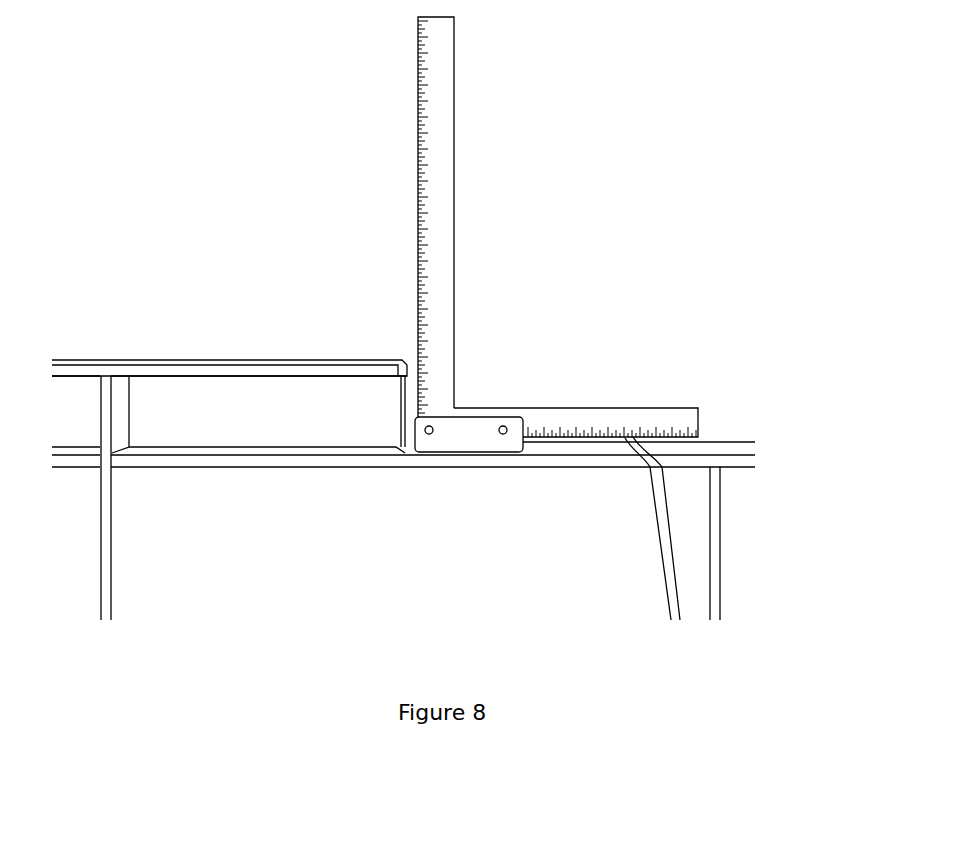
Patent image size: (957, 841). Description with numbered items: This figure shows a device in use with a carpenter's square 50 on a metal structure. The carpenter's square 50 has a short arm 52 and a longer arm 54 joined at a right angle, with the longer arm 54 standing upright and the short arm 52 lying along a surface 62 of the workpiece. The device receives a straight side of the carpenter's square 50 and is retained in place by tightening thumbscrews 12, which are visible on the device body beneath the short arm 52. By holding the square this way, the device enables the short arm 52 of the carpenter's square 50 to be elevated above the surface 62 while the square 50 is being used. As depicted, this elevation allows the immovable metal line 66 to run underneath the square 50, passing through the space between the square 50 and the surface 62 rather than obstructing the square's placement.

The thumbscrew 12 is at (426, 434).
The carpenter's square 50 is at (558, 227).
The short arm 52 is at (557, 417).
The longer arm 54 is at (442, 196).
The surface 62 is at (703, 449).
The immovable metal line 66 is at (657, 472).